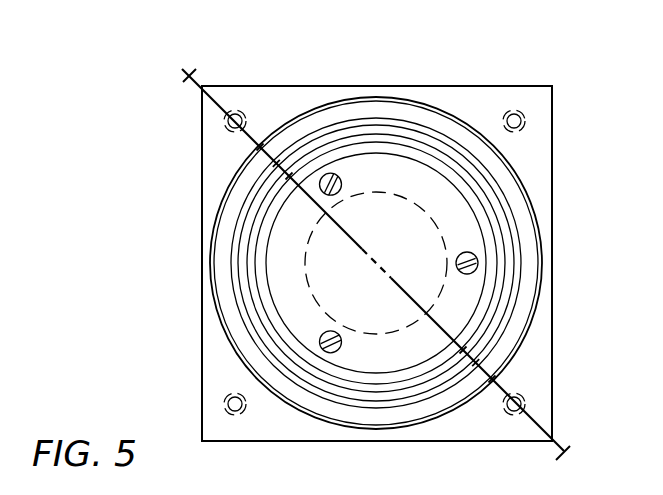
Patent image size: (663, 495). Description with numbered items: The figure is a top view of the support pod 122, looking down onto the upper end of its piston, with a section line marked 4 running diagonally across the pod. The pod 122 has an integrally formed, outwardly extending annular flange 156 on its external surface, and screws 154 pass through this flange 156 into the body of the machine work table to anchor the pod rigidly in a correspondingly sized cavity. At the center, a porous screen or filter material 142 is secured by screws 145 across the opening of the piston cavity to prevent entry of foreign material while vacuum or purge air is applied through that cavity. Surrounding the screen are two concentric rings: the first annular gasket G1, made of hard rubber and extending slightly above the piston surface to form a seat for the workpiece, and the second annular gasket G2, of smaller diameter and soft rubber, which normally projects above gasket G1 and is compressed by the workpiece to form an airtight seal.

The screws 154 is at (523, 119).
The support pod 122 is at (537, 150).
The annular flange 156 is at (548, 176).
The screws 145 is at (478, 259).
The first annular gasket G1 is at (520, 282).
The second annular gasket G2 is at (500, 303).
The porous screen or filter material 142 is at (282, 286).
The section line 4- 4 is at (189, 77).